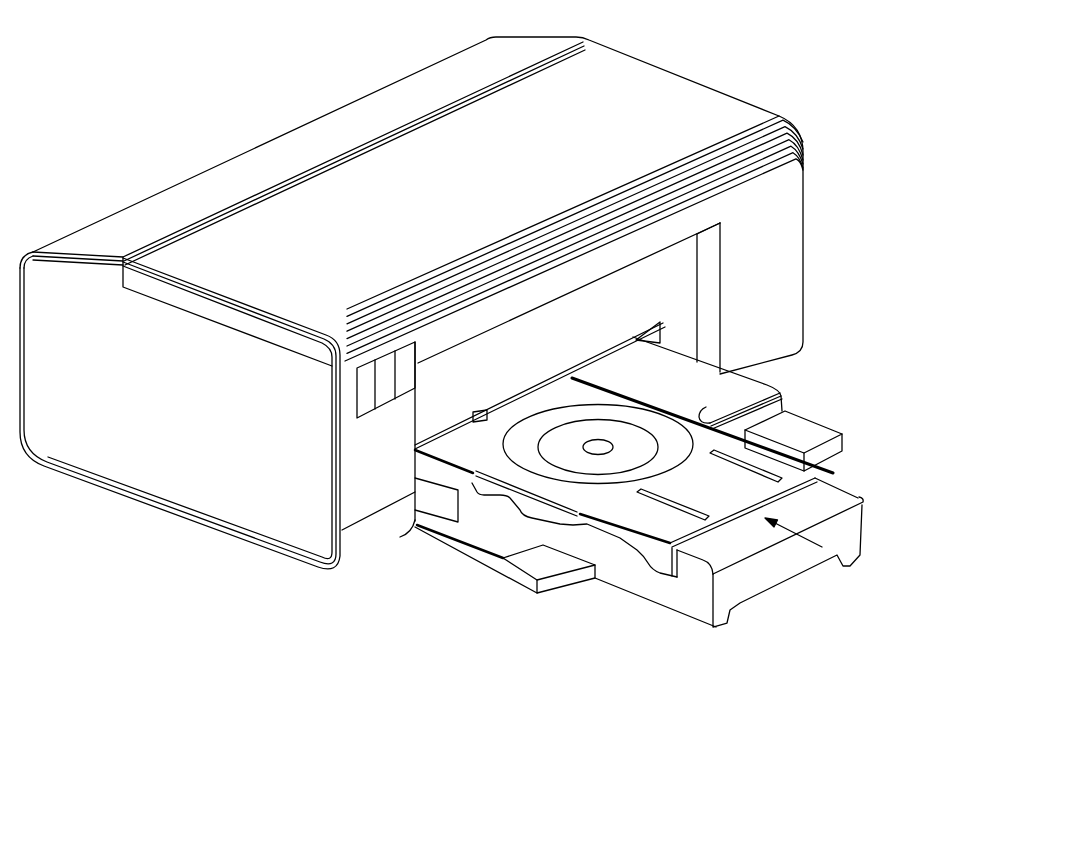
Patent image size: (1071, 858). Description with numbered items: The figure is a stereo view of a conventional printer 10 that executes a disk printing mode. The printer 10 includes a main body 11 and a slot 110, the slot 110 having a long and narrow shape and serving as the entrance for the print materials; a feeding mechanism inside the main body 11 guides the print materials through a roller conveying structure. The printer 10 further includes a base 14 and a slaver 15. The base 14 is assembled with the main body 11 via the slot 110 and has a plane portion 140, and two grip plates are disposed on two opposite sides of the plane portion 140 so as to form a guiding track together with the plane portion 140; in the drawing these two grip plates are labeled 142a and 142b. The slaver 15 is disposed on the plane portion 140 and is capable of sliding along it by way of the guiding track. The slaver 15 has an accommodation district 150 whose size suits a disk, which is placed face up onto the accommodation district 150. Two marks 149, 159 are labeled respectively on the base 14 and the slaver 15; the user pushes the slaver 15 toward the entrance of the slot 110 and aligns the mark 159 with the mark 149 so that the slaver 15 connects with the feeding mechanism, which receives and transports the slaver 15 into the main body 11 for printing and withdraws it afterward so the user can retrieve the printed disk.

The printer 10 is at (811, 51).
The main body 11 is at (308, 142).
The slot 110 is at (548, 372).
The base 14 is at (785, 562).
The plane portion 140 is at (847, 497).
The guide rail 142a is at (630, 397).
The guide rail 142b is at (453, 457).
The mark 149 is at (706, 416).
The slaver 15 is at (807, 465).
The accommodation district 150 is at (655, 458).
The mark 159 is at (768, 452).